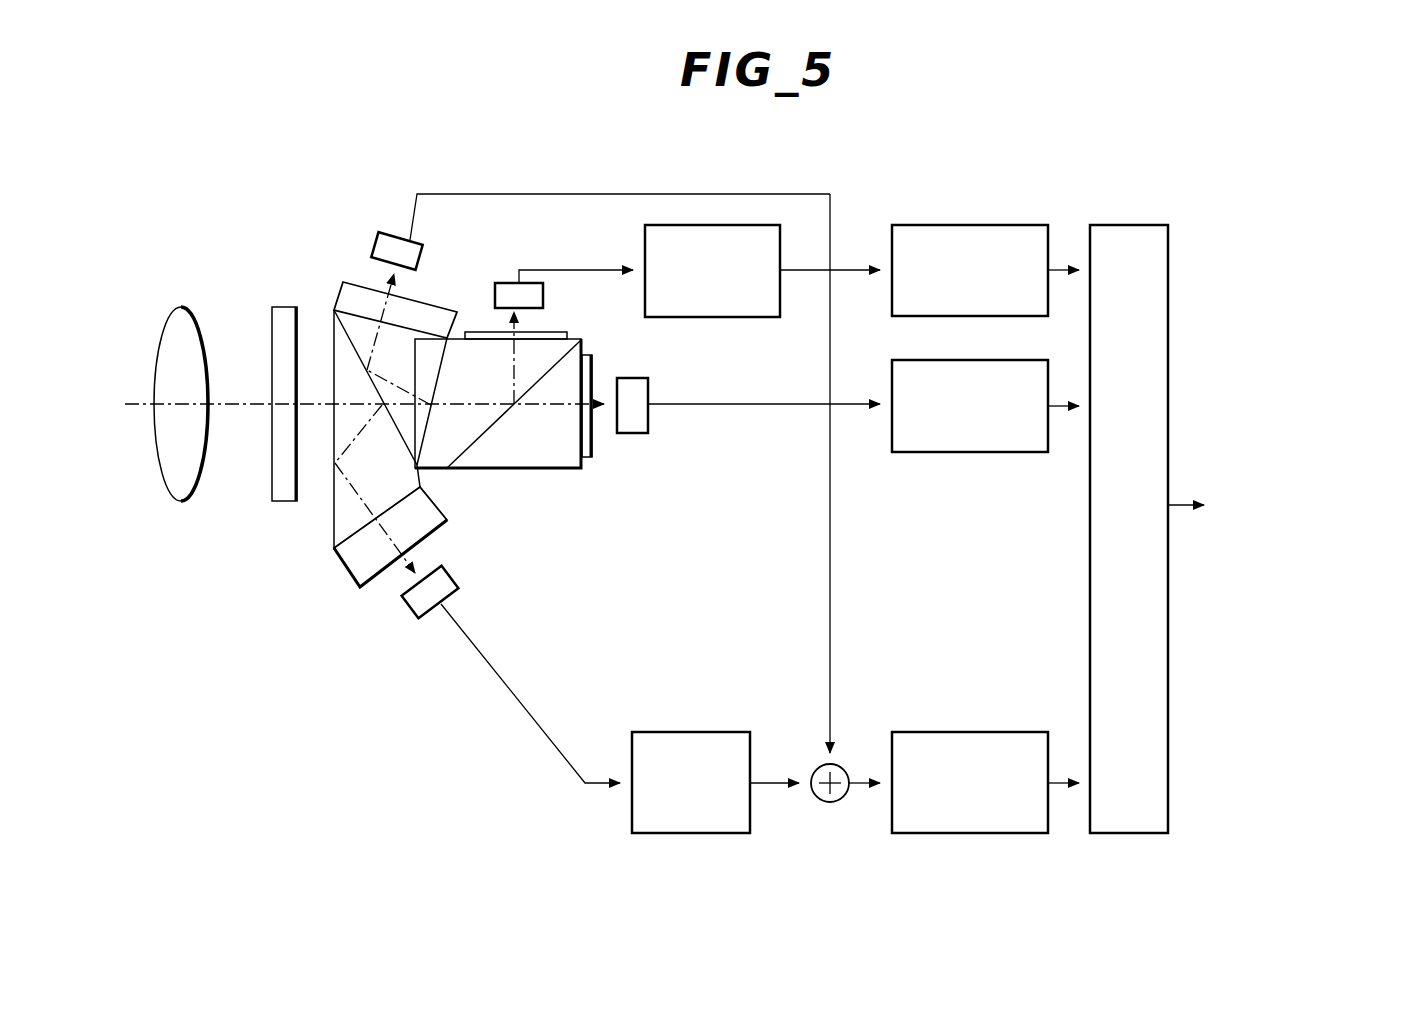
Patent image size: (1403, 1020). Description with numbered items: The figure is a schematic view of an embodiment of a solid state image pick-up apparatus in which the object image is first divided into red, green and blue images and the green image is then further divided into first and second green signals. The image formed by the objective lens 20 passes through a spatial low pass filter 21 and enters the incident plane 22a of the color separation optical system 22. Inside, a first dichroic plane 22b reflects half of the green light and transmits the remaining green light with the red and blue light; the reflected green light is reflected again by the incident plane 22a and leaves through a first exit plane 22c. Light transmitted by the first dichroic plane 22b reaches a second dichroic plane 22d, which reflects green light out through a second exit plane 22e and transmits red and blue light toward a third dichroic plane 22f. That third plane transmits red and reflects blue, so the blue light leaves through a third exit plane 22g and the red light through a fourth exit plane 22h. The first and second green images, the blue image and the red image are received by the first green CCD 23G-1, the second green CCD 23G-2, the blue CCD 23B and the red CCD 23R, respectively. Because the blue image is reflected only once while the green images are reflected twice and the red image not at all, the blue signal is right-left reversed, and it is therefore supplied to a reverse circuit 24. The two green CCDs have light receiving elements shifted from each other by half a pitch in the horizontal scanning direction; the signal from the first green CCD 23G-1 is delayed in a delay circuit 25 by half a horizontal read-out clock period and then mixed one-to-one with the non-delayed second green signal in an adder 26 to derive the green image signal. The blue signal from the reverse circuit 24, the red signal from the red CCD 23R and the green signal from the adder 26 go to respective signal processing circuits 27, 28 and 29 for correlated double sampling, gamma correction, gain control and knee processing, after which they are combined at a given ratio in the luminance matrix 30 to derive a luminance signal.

The objective lens 20 is at (190, 307).
The spatial low pass filter 21 is at (281, 307).
The color separation optical system 22 is at (322, 578).
The incident plane 22a is at (333, 343).
The first dichroic plane 22b is at (397, 448).
The first exit plane 22c is at (373, 582).
The second dichroic plane 22d is at (430, 427).
The second exit plane 22e is at (357, 282).
The third dichroic plane 22f is at (579, 339).
The third exit plane 22g is at (556, 332).
The fourth exit plane 22h is at (597, 450).
The second green CCD 23G-2 is at (421, 244).
The blue CCD 23B is at (500, 283).
The red CCD 23R is at (649, 425).
The first green CCD 23G-1 is at (444, 562).
The reverse circuit 24 is at (718, 318).
The delay circuit 25 is at (711, 732).
The adder 26 is at (843, 770).
The signal processing circuit 27 is at (973, 225).
The signal processing circuit 28 is at (968, 360).
The signal processing circuit 29 is at (982, 732).
The luminance matrix 30 is at (1128, 225).